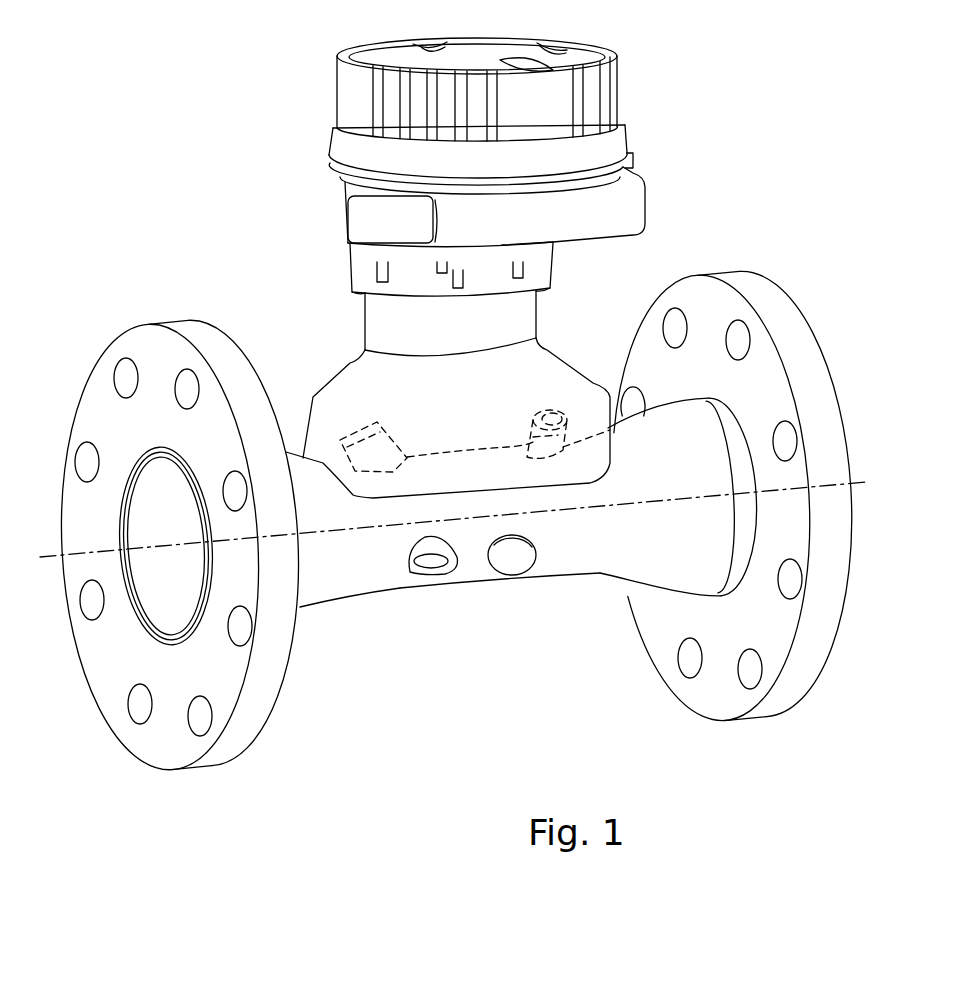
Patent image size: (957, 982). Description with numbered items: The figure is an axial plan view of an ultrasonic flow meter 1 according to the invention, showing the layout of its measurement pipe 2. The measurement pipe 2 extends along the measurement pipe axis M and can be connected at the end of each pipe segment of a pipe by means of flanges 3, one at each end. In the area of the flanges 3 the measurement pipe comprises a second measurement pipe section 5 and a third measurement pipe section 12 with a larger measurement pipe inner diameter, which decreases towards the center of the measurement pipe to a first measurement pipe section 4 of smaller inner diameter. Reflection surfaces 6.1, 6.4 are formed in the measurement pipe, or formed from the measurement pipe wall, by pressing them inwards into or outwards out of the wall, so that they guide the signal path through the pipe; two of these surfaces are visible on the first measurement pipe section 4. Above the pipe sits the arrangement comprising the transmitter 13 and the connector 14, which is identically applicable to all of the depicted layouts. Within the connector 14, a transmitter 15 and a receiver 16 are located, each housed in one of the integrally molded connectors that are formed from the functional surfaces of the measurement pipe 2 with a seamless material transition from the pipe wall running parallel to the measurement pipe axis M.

The ultrasonic flow meter 1 is at (640, 270).
The measurement pipe 2 is at (568, 562).
The flanges 3 is at (240, 747).
The first measurement pipe section 4 is at (477, 583).
The second measurement pipe section 5 is at (673, 585).
The reflection surface 6.1 is at (432, 566).
The reflection surface 6.4 is at (512, 557).
The third measurement pipe section 12 is at (312, 597).
The transmitter 13 is at (346, 223).
The connector 14 is at (348, 366).
The transmitter 15 is at (357, 430).
The receiver 16 is at (553, 405).
The measurement pipe axis M is at (836, 481).